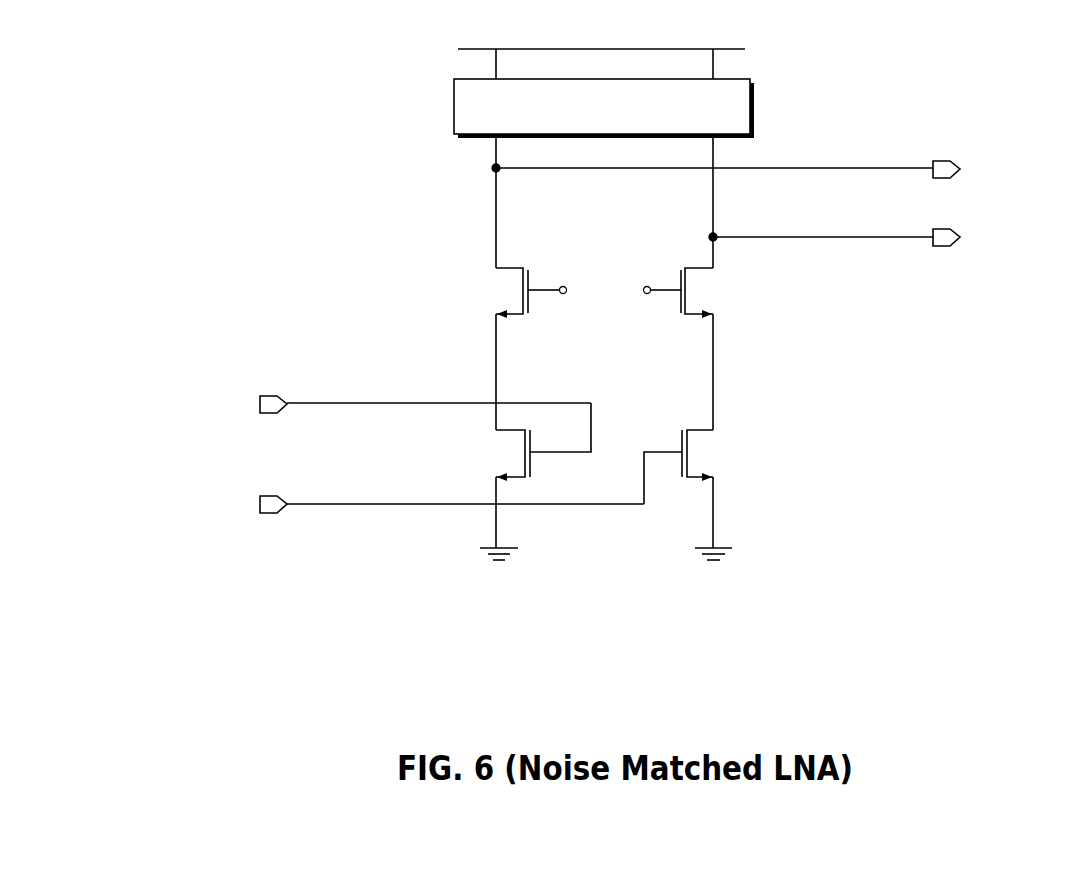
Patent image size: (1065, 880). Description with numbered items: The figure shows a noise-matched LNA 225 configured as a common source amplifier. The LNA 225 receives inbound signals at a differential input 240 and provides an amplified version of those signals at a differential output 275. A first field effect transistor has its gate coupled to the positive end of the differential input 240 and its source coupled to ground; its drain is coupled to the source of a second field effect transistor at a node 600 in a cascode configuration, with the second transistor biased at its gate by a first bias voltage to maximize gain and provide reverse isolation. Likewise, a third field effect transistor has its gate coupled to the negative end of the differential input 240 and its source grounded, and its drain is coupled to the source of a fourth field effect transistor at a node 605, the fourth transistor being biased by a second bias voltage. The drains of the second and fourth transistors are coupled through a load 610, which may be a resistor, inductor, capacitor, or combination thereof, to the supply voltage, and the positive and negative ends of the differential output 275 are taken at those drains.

The LNA 225 is at (214, 620).
The differential input 240 is at (237, 395).
The differential output 275 is at (973, 160).
The node 600 is at (496, 355).
The node 605 is at (713, 355).
The load 610 is at (753, 103).